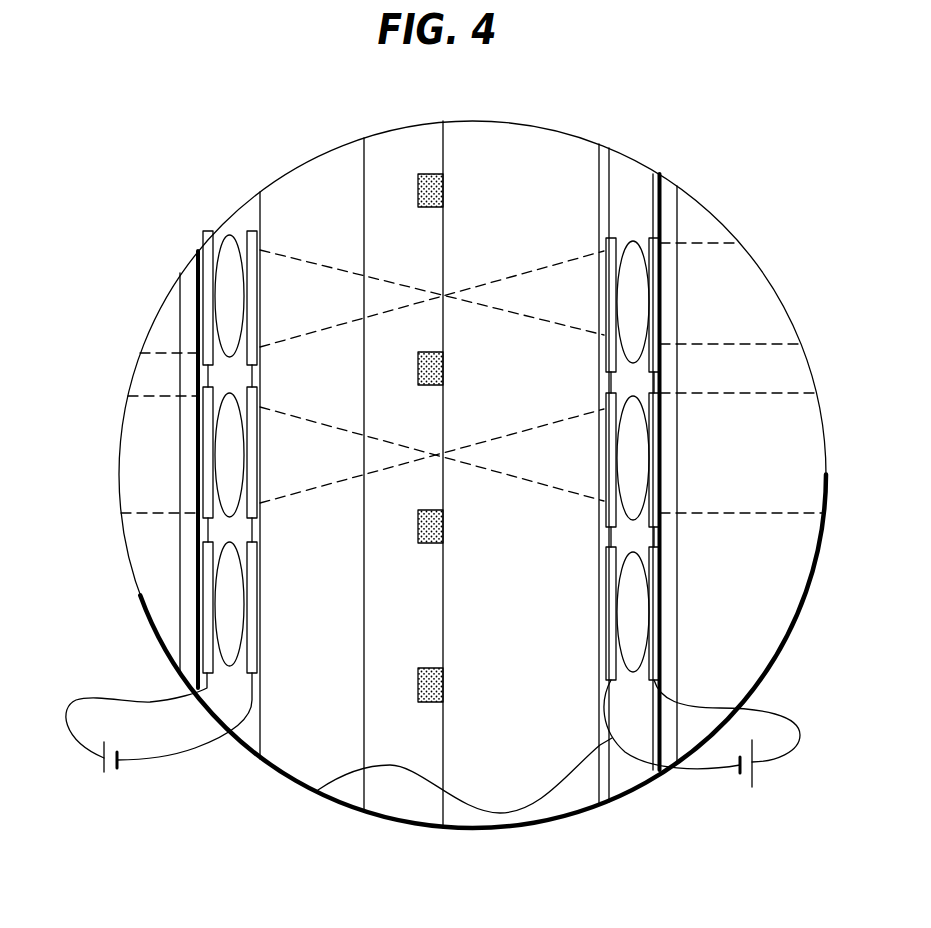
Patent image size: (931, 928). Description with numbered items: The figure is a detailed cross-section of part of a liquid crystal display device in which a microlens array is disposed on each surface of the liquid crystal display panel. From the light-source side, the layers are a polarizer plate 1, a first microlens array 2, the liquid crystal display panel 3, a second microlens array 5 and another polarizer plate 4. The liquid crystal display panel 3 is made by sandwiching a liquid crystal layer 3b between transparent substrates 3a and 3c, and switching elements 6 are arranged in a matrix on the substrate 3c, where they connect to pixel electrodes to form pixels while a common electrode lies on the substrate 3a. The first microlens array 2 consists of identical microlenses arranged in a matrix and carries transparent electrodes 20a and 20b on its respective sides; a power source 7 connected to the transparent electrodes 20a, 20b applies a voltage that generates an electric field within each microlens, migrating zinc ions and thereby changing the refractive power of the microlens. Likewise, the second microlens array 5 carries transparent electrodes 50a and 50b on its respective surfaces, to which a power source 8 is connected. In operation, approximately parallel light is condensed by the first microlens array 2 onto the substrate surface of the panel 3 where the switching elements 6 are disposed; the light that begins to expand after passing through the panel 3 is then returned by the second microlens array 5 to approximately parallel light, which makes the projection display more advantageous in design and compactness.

The polarizer plate 1 is at (185, 268).
The first microlens array 2 is at (227, 252).
The liquid crystal display panel 3 is at (470, 850).
The transparent substrate 3a is at (297, 755).
The liquid crystal layer 3b is at (387, 797).
The transparent substrate 3c is at (550, 803).
The polarizer plate 4 is at (668, 285).
The second microlens array 5 is at (630, 273).
The switching elements 6 is at (417, 350).
The power source 7 is at (97, 760).
The power source 8 is at (740, 769).
The transparent electrode 20a is at (207, 580).
The transparent electrode 20b is at (252, 606).
The transparent electrode 50a is at (607, 585).
The transparent electrode 50b is at (656, 590).